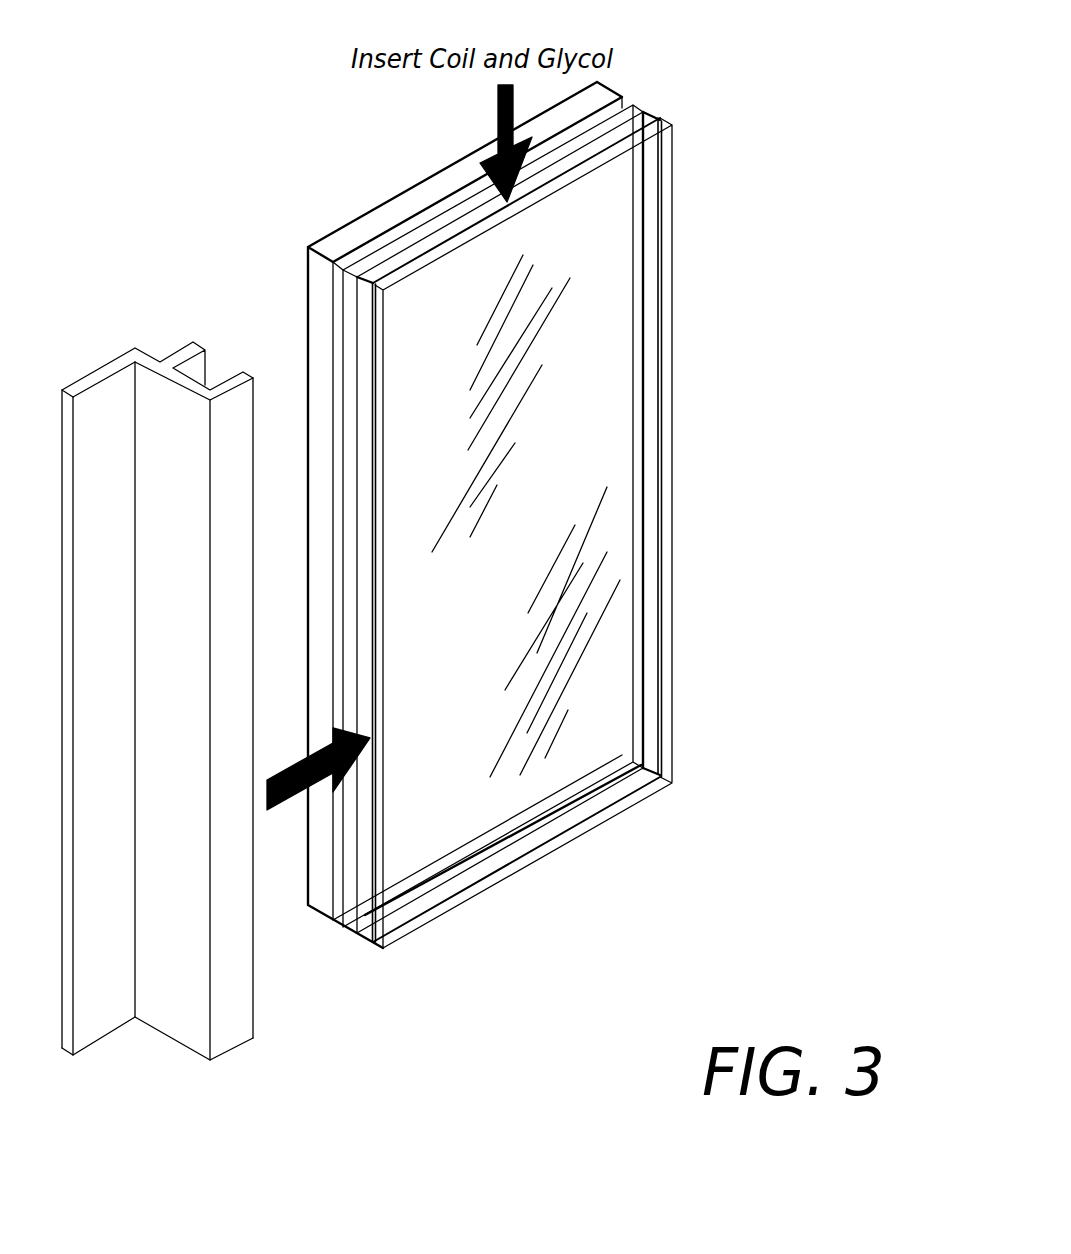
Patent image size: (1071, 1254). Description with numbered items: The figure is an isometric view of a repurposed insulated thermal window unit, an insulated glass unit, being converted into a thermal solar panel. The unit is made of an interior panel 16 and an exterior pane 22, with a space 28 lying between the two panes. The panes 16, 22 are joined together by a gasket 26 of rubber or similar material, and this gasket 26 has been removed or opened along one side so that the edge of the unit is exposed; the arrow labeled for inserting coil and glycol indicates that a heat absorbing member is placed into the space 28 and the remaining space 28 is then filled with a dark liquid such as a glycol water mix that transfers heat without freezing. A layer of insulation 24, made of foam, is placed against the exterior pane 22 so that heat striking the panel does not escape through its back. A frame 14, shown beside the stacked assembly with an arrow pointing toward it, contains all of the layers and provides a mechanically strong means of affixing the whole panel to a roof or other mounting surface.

The frame 14 is at (133, 355).
The interior panel 16 is at (673, 127).
The exterior pane 22 is at (633, 105).
The layer of insulation 24 is at (308, 247).
The gasket 26 is at (661, 120).
The space 28 is at (417, 250).